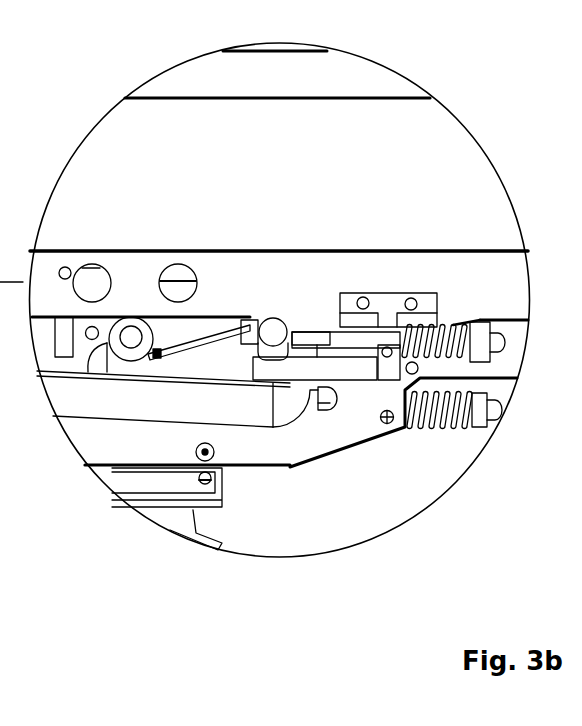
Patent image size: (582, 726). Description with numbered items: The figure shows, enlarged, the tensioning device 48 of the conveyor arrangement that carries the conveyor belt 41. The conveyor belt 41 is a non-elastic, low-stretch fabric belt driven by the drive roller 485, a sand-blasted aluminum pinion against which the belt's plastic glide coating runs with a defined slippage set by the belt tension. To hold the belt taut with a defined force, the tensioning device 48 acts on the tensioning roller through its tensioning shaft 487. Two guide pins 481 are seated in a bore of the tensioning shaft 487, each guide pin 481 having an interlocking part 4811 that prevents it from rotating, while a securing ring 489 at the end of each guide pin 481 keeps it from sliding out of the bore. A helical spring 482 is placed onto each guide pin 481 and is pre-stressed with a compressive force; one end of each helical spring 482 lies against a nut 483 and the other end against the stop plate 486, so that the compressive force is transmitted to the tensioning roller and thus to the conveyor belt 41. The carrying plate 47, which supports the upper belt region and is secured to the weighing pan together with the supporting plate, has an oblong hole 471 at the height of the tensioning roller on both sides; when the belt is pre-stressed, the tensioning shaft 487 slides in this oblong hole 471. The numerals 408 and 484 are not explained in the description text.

The conveyor belt 41 is at (172, 405).
The carrying plate 47 is at (43, 285).
The tensioning device 48 is at (203, 559).
The base plate 408 is at (240, 372).
The oblong hole 471 is at (337, 332).
The guide pin 481 is at (492, 396).
The helical spring 482 is at (462, 358).
The nut 483 is at (480, 322).
The roller 484 is at (127, 336).
The drive roller 485 is at (143, 362).
The stop plate 486 is at (387, 424).
The tensioning shaft 487 is at (270, 318).
The securing ring 489 is at (250, 318).
The interlocking part 4811 is at (362, 352).